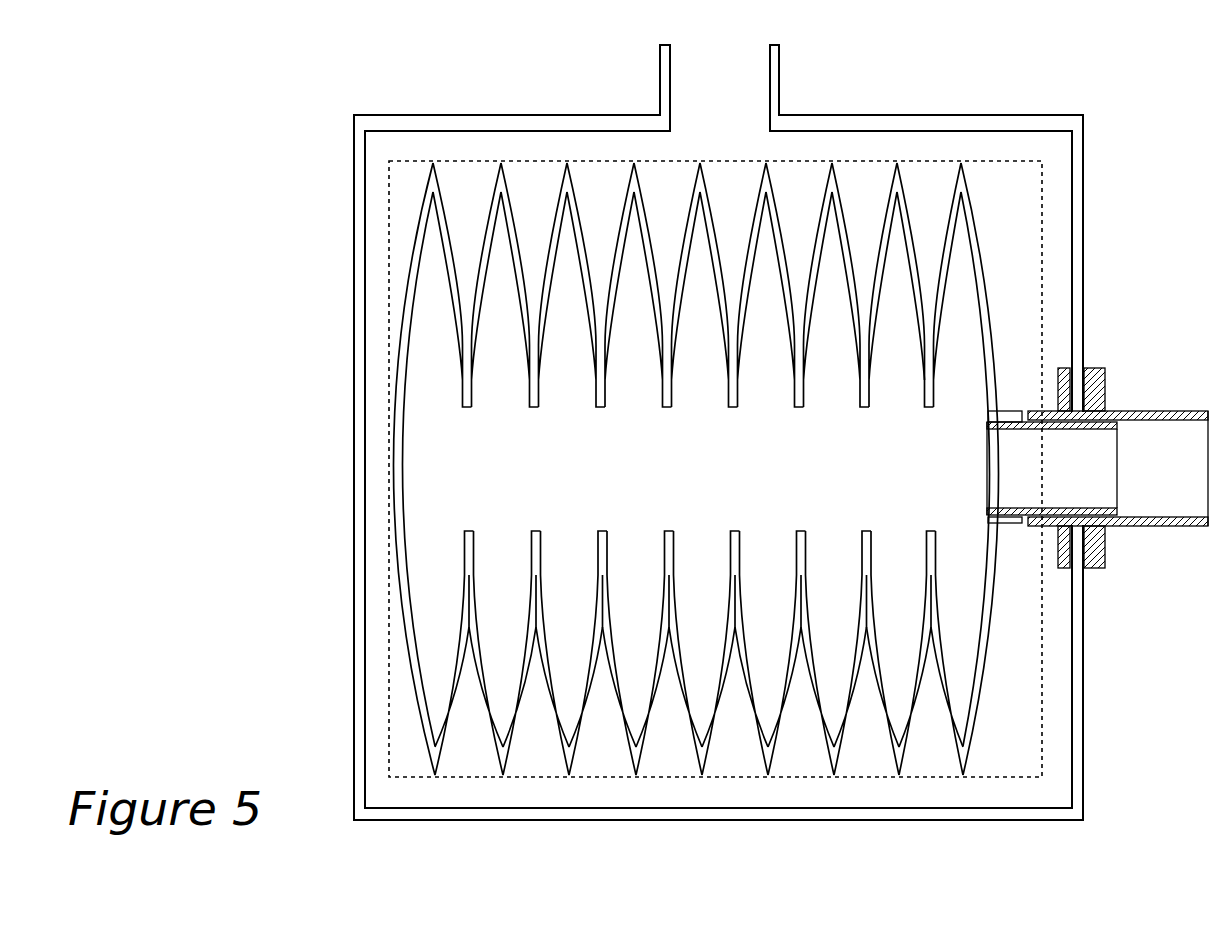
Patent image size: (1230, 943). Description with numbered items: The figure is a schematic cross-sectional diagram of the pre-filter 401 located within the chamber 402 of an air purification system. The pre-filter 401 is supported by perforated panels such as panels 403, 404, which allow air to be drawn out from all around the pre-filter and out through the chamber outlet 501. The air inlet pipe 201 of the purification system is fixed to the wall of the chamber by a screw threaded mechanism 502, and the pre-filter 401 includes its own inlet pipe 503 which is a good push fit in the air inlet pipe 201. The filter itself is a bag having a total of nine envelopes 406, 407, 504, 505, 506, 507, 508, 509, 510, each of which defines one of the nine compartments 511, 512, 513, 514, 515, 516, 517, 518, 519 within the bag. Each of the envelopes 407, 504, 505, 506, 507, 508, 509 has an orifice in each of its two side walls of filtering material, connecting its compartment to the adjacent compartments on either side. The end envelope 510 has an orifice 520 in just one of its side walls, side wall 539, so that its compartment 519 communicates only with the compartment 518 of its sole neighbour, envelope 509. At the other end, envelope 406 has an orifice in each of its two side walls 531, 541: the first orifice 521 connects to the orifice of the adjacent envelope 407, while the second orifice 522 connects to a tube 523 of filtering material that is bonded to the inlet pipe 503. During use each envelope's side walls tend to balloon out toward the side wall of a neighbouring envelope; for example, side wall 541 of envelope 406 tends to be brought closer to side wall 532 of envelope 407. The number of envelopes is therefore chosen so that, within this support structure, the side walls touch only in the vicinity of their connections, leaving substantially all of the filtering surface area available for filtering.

The air inlet pipe 201 is at (1125, 418).
The pre-filter 401 is at (1012, 698).
The chamber 402 is at (1030, 193).
The panel 403 is at (833, 777).
The panel 404 is at (388, 313).
The envelope 406 is at (960, 165).
The envelope 407 is at (897, 165).
The chamber outlet 501 is at (722, 112).
The screw threaded mechanism 502 is at (1098, 375).
The inlet pipe 503 is at (1093, 507).
The envelope 504 is at (832, 165).
The envelope 505 is at (765, 165).
The envelope 506 is at (700, 163).
The envelope 507 is at (634, 163).
The envelope 508 is at (567, 163).
The envelope 509 is at (500, 163).
The envelope 510 is at (433, 163).
The compartment 511 is at (1039, 418).
The compartment 512 is at (941, 418).
The compartment 513 is at (859, 418).
The compartment 514 is at (794, 418).
The compartment 515 is at (675, 419).
The compartment 516 is at (616, 419).
The compartment 517 is at (555, 419).
The compartment 518 is at (495, 419).
The compartment 519 is at (430, 419).
The orifice 520 is at (468, 463).
The first orifice 521 is at (930, 455).
The second orifice 522 is at (998, 525).
The tube of filtering material 523 is at (998, 412).
The side wall 531 is at (988, 312).
The side wall 532 is at (912, 222).
The side wall 539 is at (443, 222).
The side wall 541 is at (940, 270).